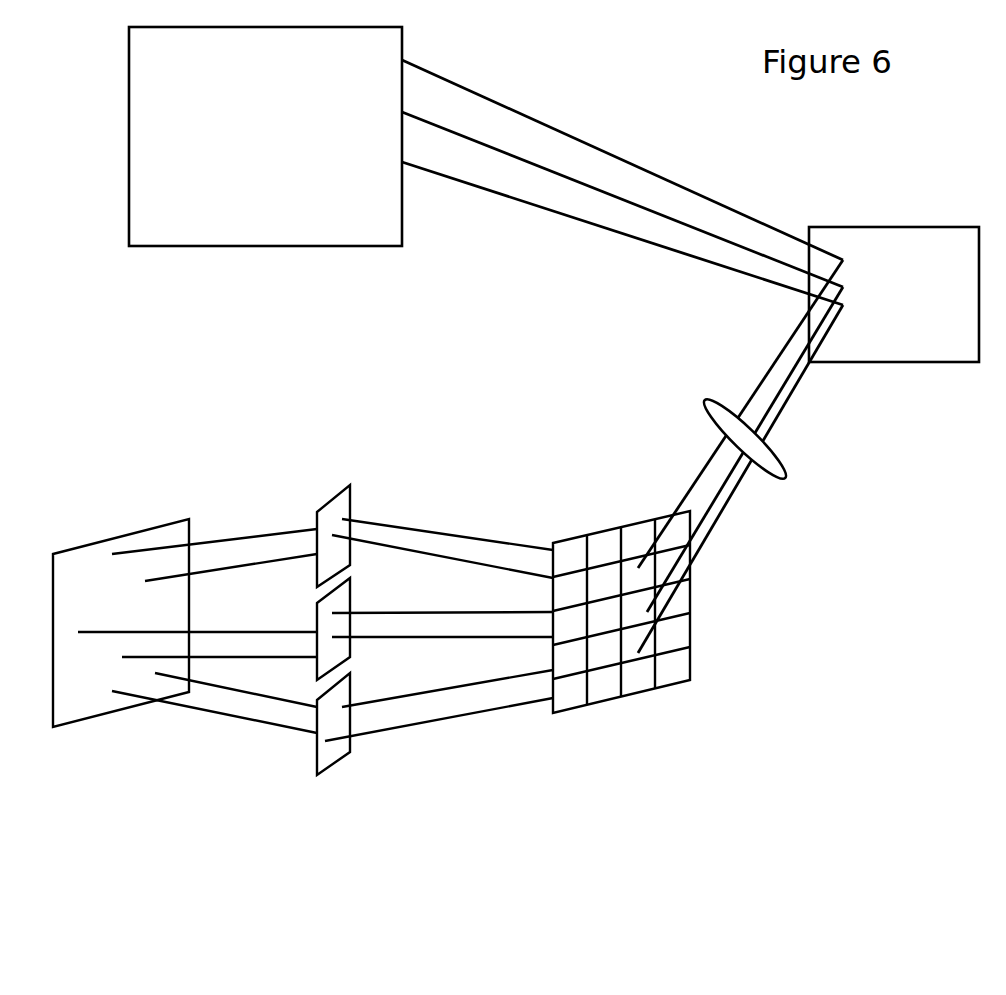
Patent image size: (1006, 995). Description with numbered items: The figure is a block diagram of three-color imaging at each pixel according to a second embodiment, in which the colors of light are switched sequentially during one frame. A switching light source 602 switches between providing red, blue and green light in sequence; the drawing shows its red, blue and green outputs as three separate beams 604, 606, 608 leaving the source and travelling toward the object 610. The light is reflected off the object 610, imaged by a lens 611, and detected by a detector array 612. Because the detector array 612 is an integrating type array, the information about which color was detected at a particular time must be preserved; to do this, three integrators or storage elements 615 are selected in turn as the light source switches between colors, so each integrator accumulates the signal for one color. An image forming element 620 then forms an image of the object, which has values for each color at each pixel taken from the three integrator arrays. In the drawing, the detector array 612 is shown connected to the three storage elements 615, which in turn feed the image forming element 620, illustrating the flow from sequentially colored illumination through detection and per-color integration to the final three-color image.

The switching light source 602 is at (265, 136).
The red light beam 604 is at (530, 121).
The blue light beam 606 is at (570, 178).
The green light beam 608 is at (640, 240).
The object 610 is at (894, 294).
The lens 611 is at (775, 439).
The detector array 612 is at (636, 648).
The integrators or storage elements 615 is at (320, 683).
The image forming element 620 is at (185, 687).